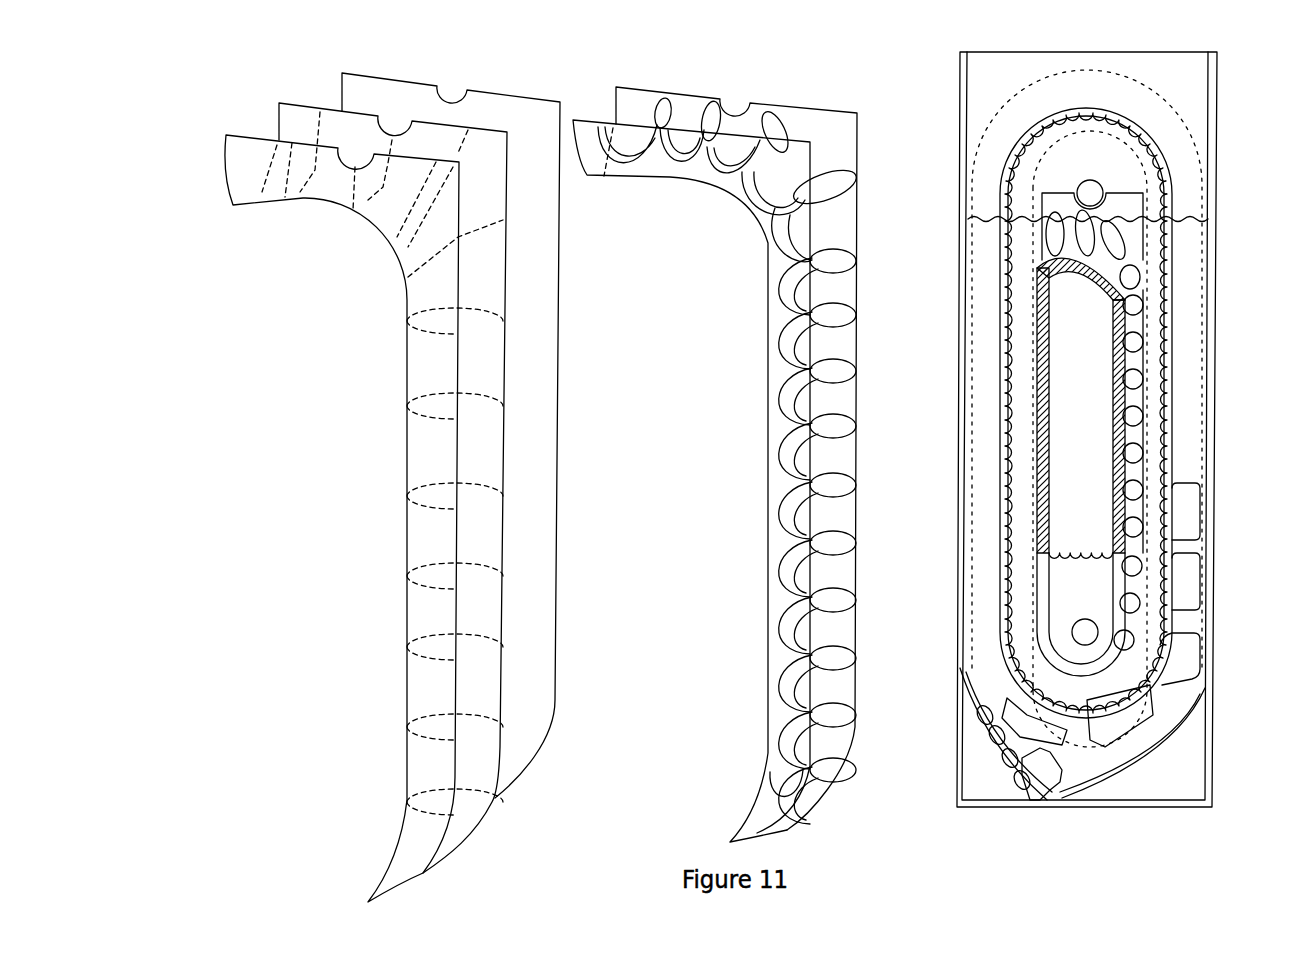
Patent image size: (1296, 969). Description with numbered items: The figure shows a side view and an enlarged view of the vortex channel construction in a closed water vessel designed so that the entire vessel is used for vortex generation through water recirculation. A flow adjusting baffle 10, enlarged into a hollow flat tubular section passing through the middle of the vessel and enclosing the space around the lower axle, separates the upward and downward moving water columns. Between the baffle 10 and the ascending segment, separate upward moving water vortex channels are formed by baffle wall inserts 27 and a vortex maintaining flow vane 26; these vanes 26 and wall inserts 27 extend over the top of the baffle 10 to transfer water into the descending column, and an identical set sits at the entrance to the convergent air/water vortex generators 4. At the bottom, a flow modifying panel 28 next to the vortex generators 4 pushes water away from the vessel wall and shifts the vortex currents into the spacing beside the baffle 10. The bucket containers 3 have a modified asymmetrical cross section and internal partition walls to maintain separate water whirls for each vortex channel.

The baffle wall insert 27 is at (485, 379).
The vortex maintaining flow vane 26 is at (842, 315).
The flow adjusting baffle 10 is at (1115, 450).
The bucket container 3 is at (1193, 518).
The flow modifying panel 28 is at (1193, 702).
The convergent air/water vortex generator 4 is at (1053, 777).